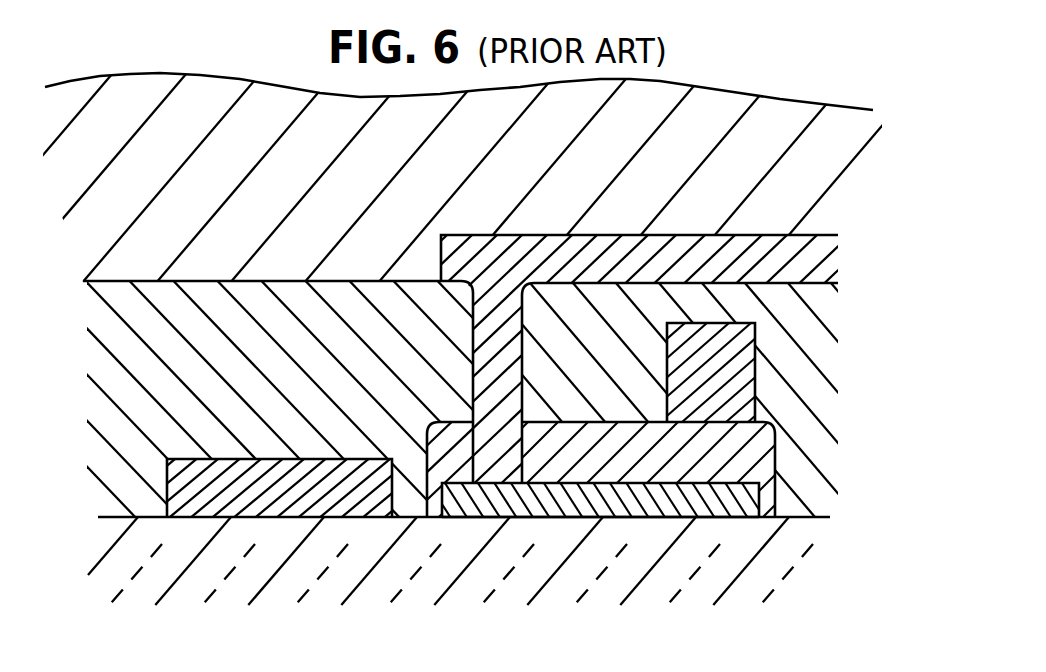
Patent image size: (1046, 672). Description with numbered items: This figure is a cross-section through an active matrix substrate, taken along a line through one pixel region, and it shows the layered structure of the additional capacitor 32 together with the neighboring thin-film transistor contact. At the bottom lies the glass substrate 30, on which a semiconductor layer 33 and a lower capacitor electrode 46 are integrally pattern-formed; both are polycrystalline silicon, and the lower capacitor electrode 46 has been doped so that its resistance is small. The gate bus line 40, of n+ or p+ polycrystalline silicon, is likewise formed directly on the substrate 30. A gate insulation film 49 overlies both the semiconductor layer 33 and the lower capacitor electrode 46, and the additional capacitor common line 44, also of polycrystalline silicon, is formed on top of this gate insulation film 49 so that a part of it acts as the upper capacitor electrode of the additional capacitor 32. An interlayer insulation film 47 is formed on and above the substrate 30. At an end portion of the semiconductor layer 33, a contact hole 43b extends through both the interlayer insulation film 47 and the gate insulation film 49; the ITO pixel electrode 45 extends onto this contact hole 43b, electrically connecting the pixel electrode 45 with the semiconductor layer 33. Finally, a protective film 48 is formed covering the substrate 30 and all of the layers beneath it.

The glass substrate 30 is at (646, 572).
The additional capacitor 32 is at (723, 314).
The semiconductor layer 33 is at (455, 516).
The gate bus line 40 is at (268, 517).
The contact hole 43b is at (496, 508).
The additional capacitor common line 44 is at (757, 363).
The pixel electrode 45 is at (616, 252).
The lower capacitor electrode 46 is at (718, 520).
The interlayer insulation film 47 is at (183, 313).
The protective film 48 is at (265, 122).
The gate insulation film 49 is at (580, 483).